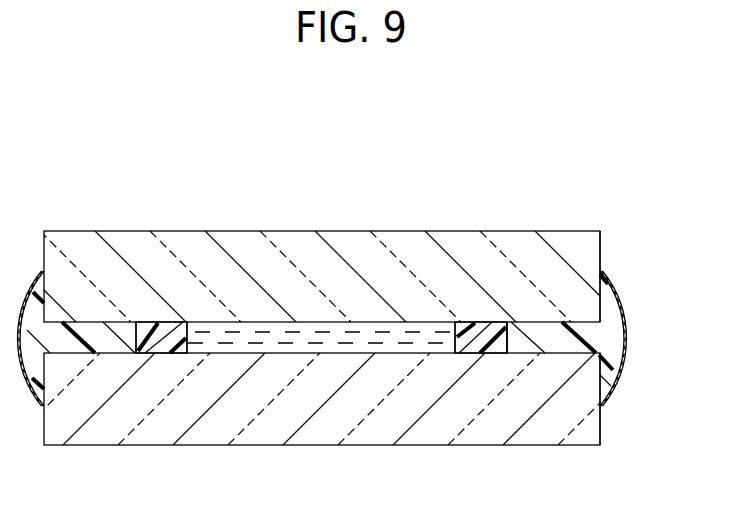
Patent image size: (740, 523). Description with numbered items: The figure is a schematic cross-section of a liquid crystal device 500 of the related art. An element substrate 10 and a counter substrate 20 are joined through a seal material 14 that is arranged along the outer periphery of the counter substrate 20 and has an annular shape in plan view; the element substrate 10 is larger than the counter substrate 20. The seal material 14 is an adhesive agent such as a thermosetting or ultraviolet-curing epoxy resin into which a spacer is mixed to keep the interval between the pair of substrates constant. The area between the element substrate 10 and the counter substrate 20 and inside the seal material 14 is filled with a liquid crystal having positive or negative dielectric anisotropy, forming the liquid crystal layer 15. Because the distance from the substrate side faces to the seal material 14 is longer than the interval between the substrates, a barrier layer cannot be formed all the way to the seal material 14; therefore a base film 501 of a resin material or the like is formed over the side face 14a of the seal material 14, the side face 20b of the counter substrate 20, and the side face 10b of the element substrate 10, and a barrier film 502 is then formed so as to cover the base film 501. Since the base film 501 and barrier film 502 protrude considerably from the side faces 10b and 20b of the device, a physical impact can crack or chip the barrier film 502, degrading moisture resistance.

The liquid crystal device 500 is at (597, 159).
The element substrate 10 is at (368, 433).
The side face of element substrate 10b is at (602, 427).
The counter substrate 20 is at (370, 243).
The side face of counter substrate 20b is at (602, 258).
The seal material 14 is at (172, 332).
The side face of seal material 14a is at (508, 338).
The liquid crystal layer 15 is at (278, 333).
The base film 501 is at (604, 327).
The barrier film 502 is at (622, 350).